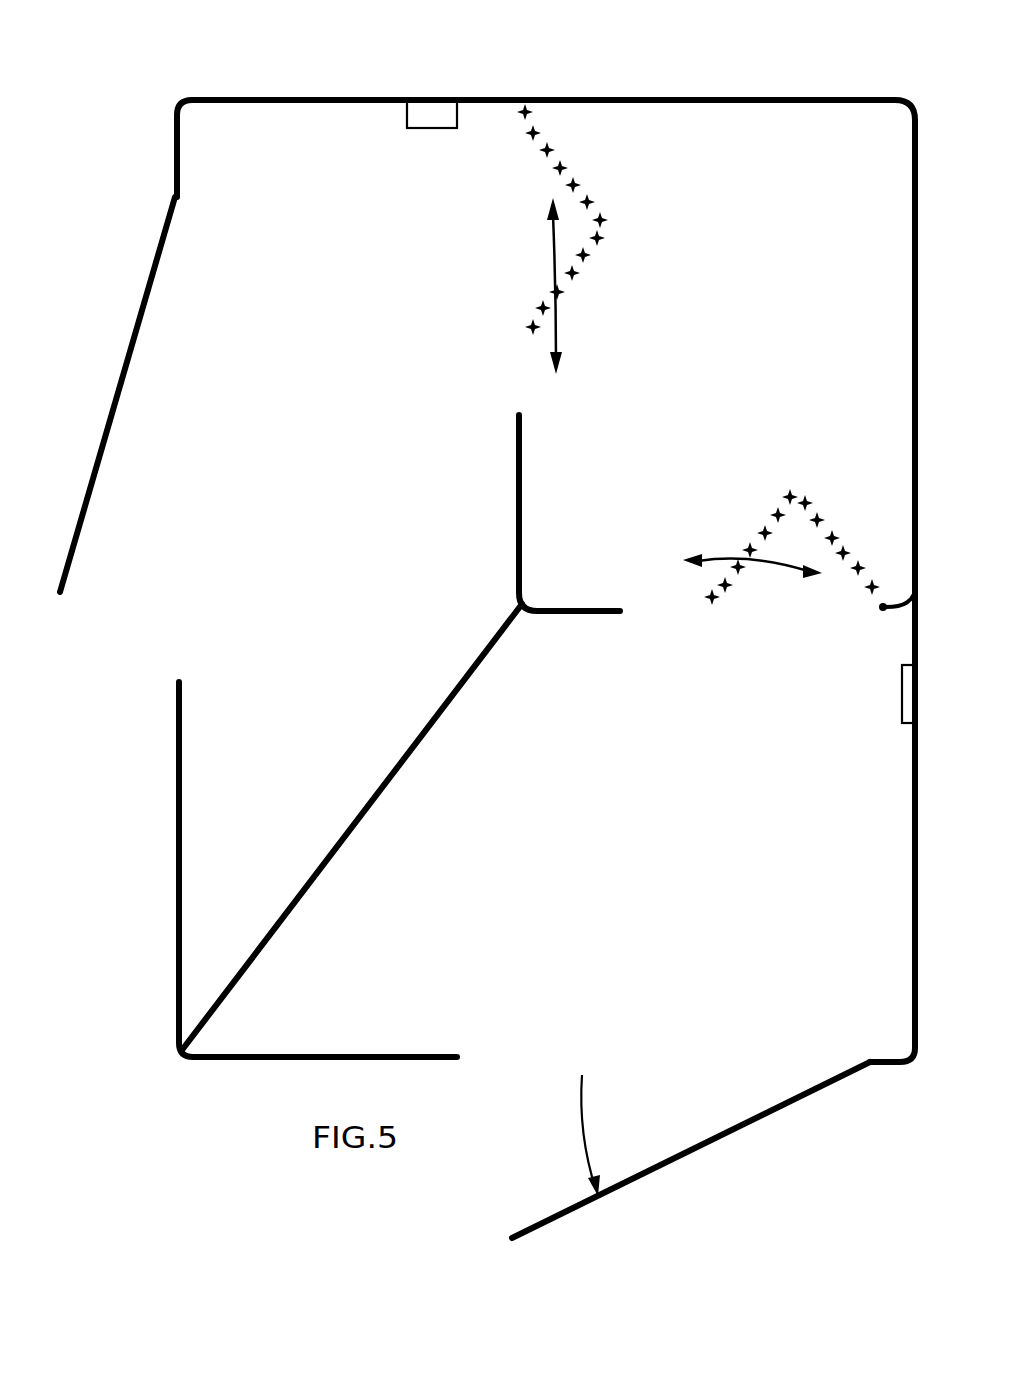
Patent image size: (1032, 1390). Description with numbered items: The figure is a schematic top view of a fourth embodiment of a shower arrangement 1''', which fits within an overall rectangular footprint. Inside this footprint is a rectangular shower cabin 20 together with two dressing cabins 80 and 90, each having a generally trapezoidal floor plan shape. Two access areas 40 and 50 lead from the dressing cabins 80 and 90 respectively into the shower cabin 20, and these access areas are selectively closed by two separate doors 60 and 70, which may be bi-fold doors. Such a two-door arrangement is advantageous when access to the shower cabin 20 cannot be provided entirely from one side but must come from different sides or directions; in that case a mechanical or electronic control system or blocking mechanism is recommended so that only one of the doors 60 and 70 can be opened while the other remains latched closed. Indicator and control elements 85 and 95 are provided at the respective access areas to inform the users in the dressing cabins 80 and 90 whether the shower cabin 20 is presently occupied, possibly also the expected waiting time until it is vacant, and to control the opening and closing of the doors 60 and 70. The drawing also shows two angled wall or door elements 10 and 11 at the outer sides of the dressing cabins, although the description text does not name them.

The shower arrangement 1''' is at (546, 536).
The hinged door 10 is at (165, 552).
The hinged door 11 is at (723, 1137).
The shower cabin 20 is at (733, 343).
The access area 40 is at (530, 272).
The access area 50 is at (760, 600).
The door 60 is at (552, 150).
The door 70 is at (835, 536).
The dressing cabin 80 is at (352, 635).
The indicator and control element 85 is at (428, 113).
The dressing cabin 90 is at (640, 917).
The indicator and control element 95 is at (900, 690).